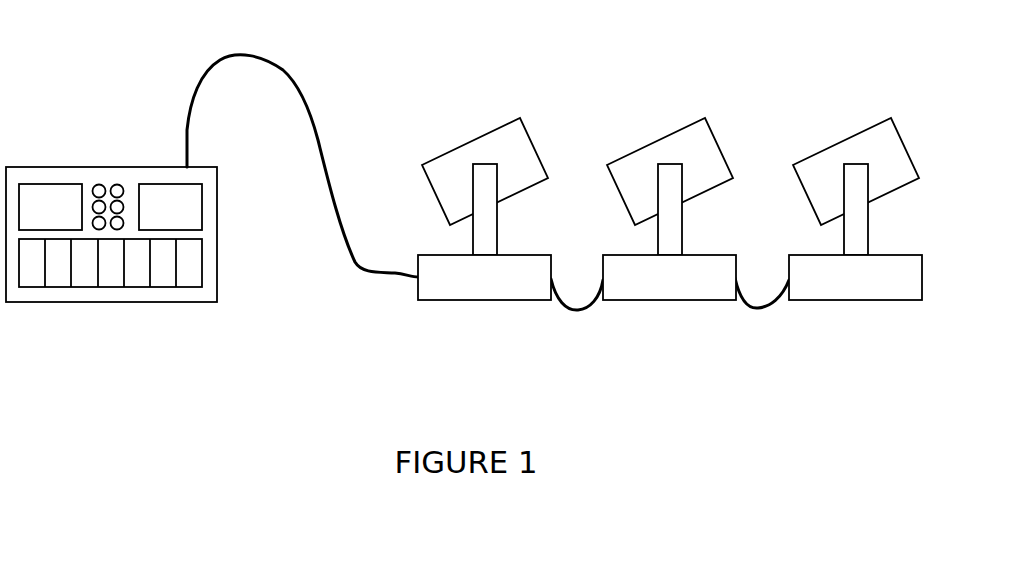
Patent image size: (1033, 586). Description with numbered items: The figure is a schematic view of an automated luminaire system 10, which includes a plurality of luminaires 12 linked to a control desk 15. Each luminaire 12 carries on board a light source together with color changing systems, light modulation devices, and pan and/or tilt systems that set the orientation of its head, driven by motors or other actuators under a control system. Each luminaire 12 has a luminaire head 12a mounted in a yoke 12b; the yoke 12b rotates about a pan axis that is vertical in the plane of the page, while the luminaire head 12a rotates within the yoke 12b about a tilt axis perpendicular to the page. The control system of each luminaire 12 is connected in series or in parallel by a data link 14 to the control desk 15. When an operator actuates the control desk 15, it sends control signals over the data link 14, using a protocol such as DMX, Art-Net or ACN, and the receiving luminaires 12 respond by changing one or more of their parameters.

The luminaire system 10 is at (151, 97).
The luminaire 12 is at (649, 188).
The luminaire head 12a is at (434, 158).
The yoke 12b is at (498, 235).
The data link 14 is at (210, 70).
The control desk 15 is at (97, 298).